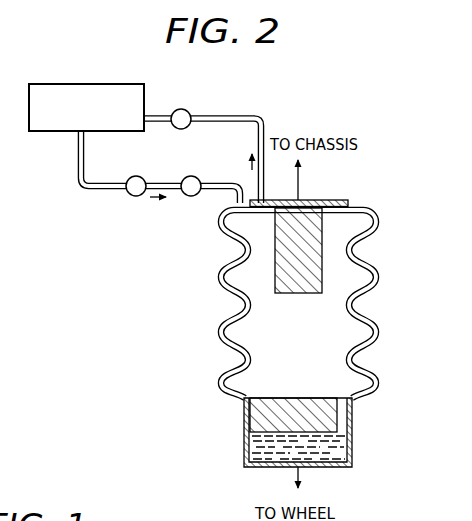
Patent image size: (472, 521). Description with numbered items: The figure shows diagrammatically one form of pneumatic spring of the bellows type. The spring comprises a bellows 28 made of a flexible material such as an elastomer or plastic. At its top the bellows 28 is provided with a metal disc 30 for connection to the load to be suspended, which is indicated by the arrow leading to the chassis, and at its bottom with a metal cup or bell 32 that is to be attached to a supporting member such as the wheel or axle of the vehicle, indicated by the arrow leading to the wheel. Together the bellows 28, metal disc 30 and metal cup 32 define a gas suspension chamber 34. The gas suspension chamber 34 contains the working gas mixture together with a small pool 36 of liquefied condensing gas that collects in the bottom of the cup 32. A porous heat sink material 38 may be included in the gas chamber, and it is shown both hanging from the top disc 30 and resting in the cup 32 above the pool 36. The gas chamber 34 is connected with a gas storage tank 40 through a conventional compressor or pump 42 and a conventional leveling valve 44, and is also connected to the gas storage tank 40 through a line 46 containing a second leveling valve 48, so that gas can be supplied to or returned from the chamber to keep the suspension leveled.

The bellows 28 is at (378, 273).
The metal disc 30 is at (315, 200).
The metal cup 32 is at (354, 443).
The gas suspension chamber 34 is at (288, 356).
The pool of liquefied condensing gas 36 is at (321, 456).
The porous heat sink material 38 is at (292, 289).
The gas storage tank 40 is at (72, 115).
The compressor or pump 42 is at (131, 197).
The leveling valve 44 is at (186, 197).
The line 46 is at (258, 137).
The leveling valve 48 is at (187, 111).